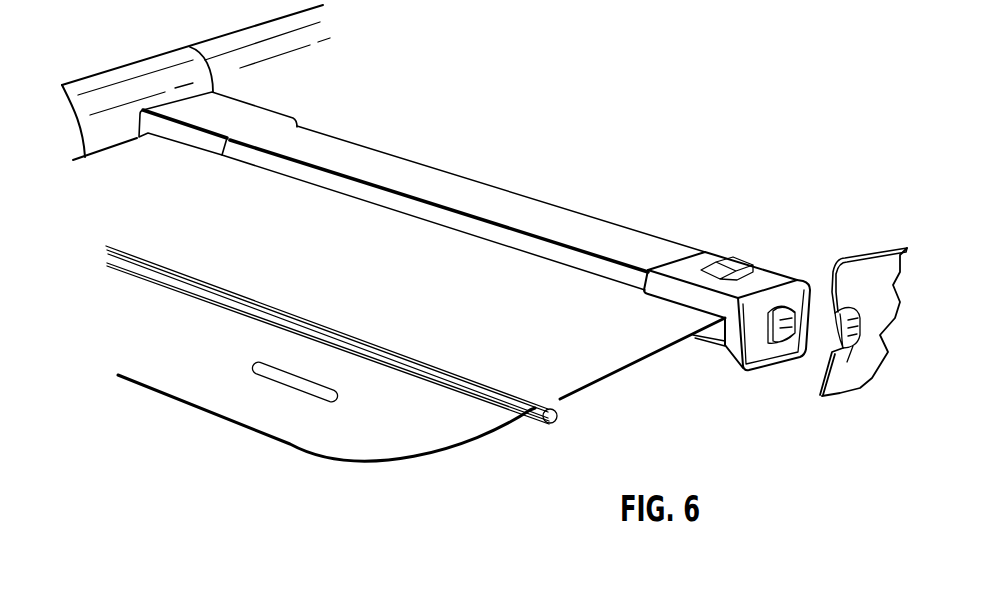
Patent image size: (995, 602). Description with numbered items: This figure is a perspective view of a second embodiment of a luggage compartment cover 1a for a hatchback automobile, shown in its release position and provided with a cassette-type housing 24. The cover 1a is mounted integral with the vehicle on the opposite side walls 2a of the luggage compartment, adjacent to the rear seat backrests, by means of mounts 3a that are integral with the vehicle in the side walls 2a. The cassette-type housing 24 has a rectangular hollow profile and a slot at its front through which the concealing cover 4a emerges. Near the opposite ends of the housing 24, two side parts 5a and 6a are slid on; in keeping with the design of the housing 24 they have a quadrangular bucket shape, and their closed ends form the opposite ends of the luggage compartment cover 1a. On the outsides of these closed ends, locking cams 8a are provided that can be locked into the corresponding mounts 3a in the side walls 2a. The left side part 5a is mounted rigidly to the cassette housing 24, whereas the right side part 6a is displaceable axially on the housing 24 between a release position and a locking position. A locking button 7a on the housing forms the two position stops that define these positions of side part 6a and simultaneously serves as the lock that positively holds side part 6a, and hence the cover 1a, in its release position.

The luggage compartment cover 1a is at (403, 149).
The side wall 2a is at (116, 112).
The mount 3a is at (831, 398).
The concealing cover 4a is at (515, 342).
The left side part 5a is at (240, 113).
The right side part 6a is at (775, 278).
The locking button 7a is at (734, 258).
The locking cam 8a is at (787, 336).
The cassette-type housing 24 is at (550, 225).